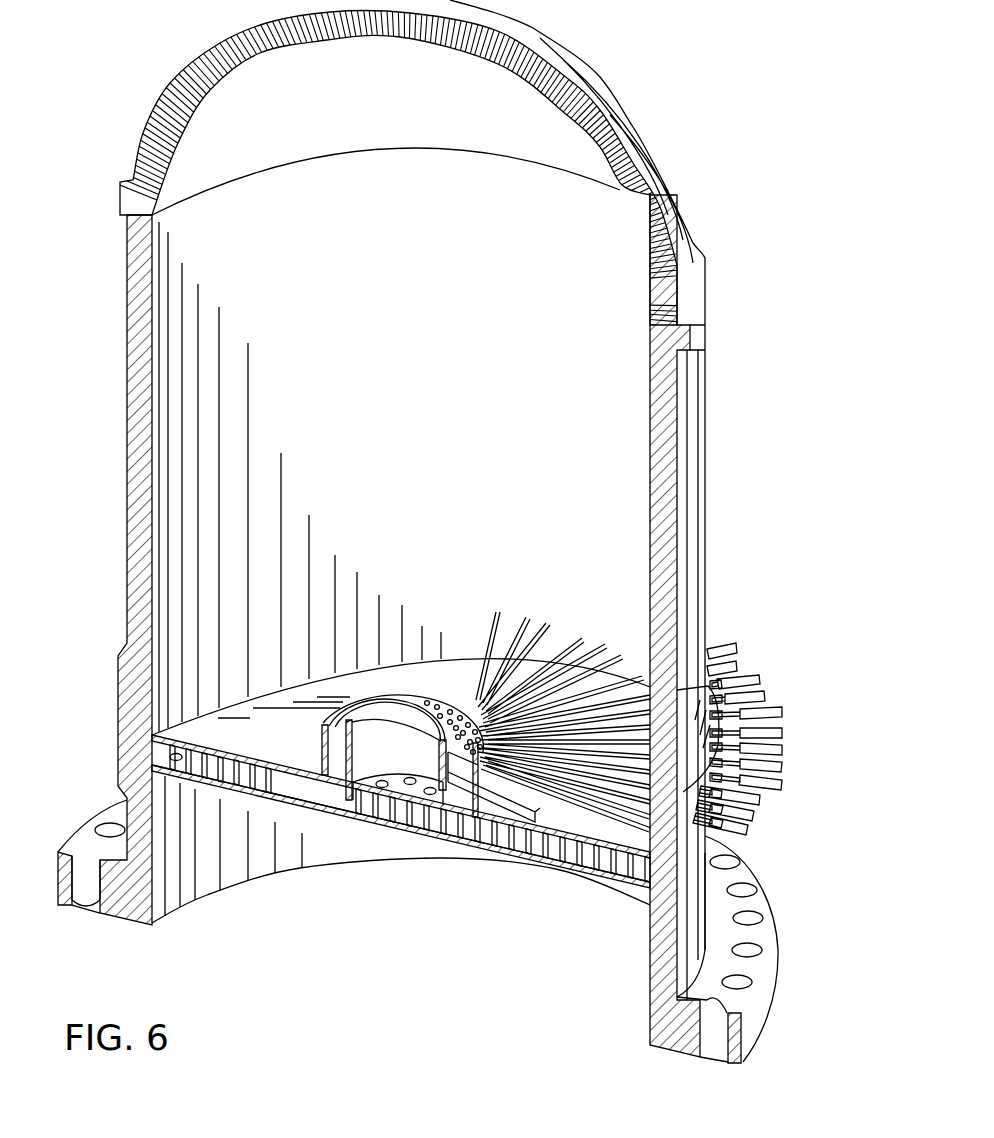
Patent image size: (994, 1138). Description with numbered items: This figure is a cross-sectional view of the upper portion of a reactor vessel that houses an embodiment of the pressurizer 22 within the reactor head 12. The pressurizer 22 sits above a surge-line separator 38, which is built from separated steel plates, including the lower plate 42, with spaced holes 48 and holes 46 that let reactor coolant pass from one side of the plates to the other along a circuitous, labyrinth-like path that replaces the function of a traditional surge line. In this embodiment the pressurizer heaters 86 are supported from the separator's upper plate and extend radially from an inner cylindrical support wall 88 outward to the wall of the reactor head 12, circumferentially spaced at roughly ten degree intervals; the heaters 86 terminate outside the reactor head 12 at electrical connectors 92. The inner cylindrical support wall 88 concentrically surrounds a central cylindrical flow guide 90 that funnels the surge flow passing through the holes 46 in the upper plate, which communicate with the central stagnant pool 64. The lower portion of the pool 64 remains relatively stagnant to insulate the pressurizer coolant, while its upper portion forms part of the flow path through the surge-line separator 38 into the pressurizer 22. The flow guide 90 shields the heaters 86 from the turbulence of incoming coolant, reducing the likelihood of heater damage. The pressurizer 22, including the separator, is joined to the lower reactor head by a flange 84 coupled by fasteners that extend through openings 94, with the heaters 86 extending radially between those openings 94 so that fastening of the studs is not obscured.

The reactor head 12 is at (695, 398).
The pressurizer 22 is at (597, 442).
The surge-line separator 38 is at (542, 896).
The lower plate 42 is at (290, 806).
The holes 46 is at (382, 790).
The holes 48 is at (176, 752).
The central stagnant pool 64 is at (432, 833).
The flange 84 is at (763, 1010).
The pressurizer heaters 86 is at (645, 868).
The inner cylindrical support wall 88 is at (416, 692).
The central cylindrical flow guide 90 is at (369, 722).
The electrical connectors 92 is at (765, 708).
The openings 94 is at (752, 917).